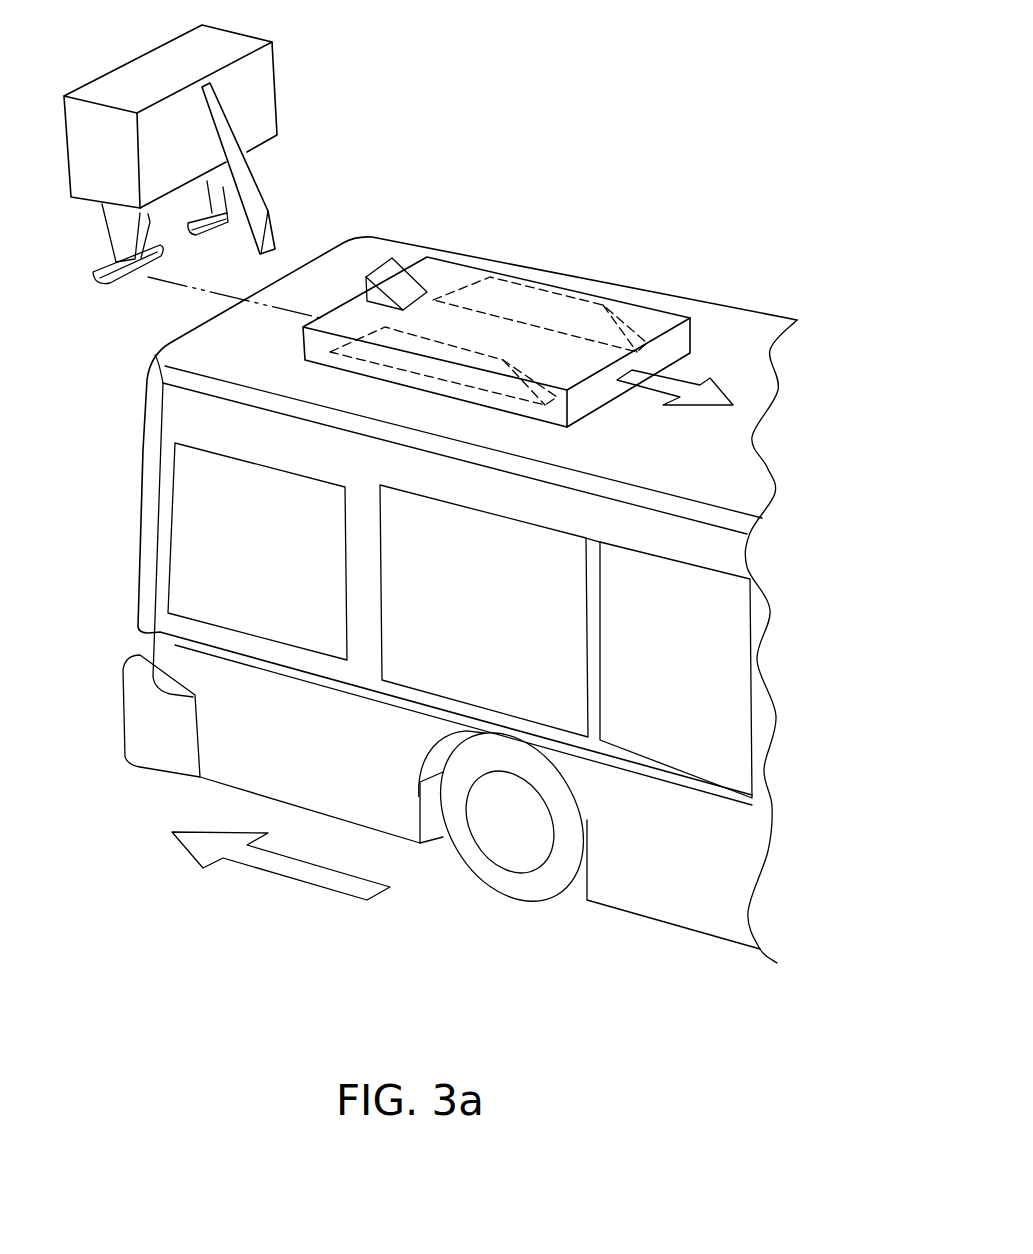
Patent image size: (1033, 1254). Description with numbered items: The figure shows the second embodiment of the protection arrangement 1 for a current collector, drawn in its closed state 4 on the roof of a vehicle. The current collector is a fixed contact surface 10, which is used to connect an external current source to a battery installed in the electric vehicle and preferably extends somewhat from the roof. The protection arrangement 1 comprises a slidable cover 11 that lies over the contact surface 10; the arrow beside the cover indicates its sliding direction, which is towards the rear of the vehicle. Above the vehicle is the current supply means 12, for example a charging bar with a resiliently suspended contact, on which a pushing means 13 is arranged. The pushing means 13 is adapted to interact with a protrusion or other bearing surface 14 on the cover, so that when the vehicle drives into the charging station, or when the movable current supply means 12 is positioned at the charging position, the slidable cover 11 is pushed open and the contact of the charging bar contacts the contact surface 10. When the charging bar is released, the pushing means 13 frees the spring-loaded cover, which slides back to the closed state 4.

The protection arrangement 1 is at (663, 68).
The closed state 4 is at (525, 242).
The contact surface 10 is at (562, 293).
The slidable cover 11 is at (652, 320).
The current supply means 12 is at (248, 110).
The pushing means 13 is at (270, 228).
The bearing surface 14 is at (407, 283).